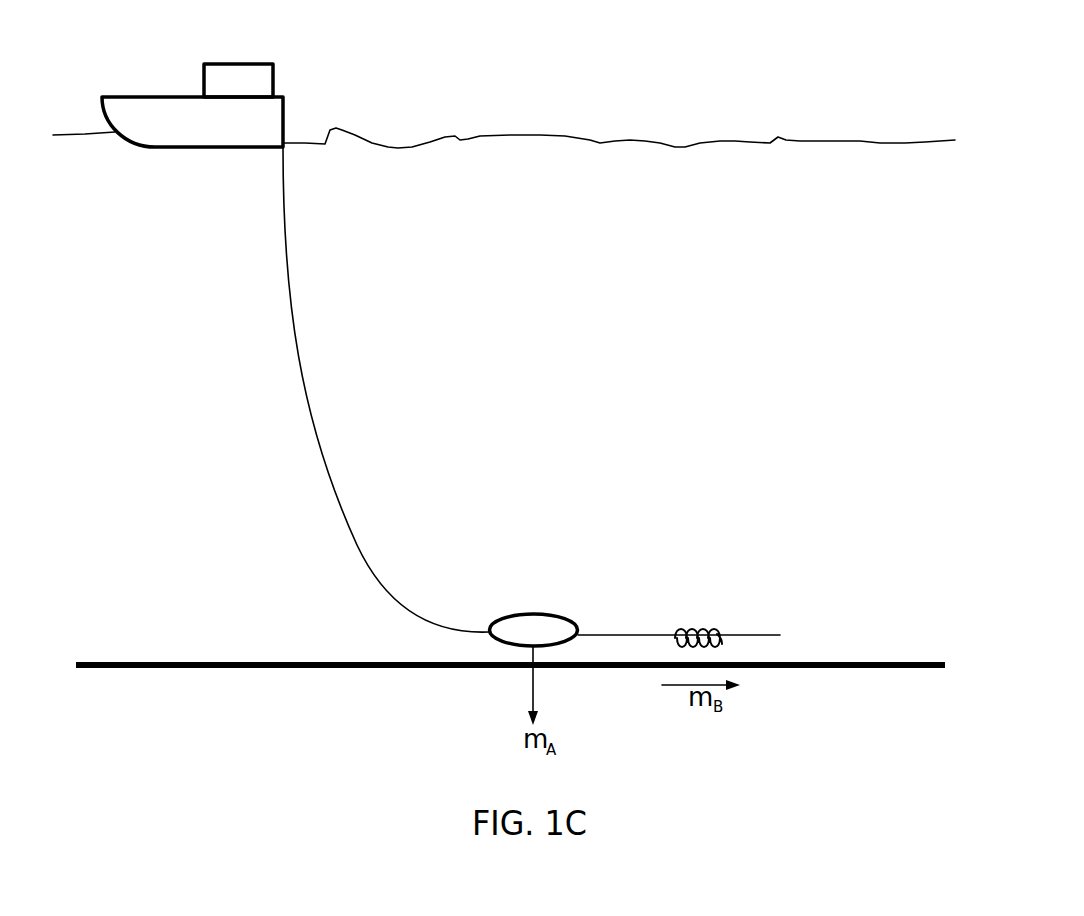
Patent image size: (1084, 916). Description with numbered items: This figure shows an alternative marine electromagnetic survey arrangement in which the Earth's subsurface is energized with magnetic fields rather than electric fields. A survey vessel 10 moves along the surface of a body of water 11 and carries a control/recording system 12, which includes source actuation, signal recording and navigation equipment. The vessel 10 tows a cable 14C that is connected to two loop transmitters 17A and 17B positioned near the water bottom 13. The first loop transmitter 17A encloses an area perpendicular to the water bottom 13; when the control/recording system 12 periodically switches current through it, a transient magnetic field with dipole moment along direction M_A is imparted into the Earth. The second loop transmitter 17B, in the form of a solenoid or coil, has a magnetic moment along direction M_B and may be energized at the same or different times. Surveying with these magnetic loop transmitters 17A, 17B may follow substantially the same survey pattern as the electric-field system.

The survey vessel 10 is at (146, 107).
The control/recording system 12 is at (248, 72).
The body of water 11 is at (566, 138).
The cable 14C is at (300, 381).
The first loop transmitter 17A is at (530, 613).
The second loop transmitter 17B is at (690, 633).
The water bottom 13 is at (805, 667).